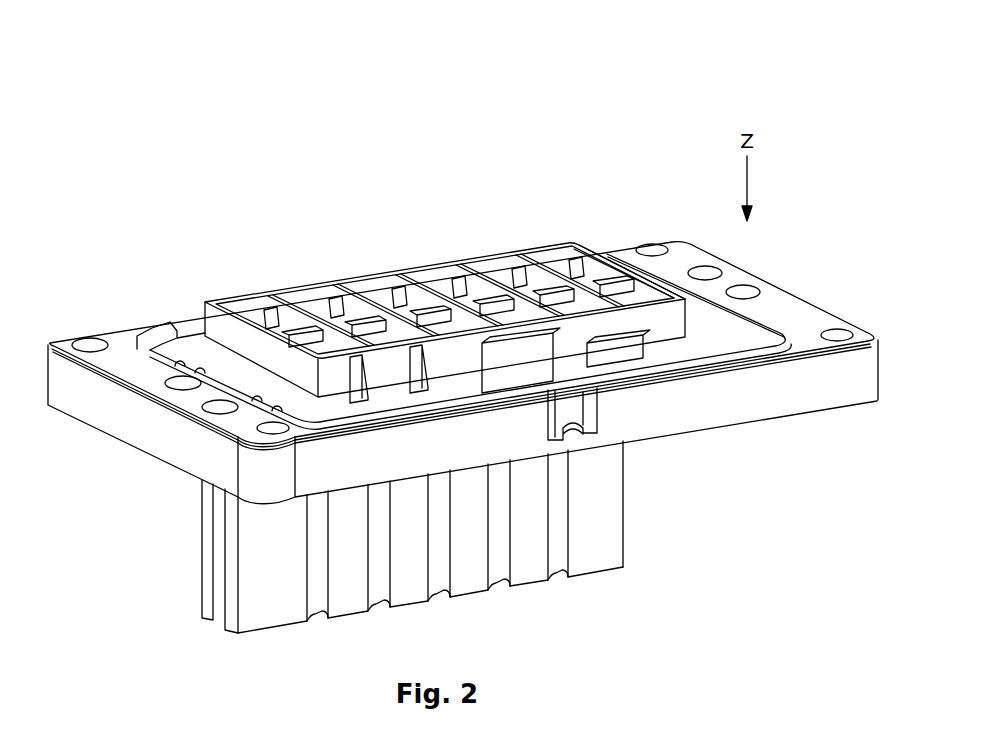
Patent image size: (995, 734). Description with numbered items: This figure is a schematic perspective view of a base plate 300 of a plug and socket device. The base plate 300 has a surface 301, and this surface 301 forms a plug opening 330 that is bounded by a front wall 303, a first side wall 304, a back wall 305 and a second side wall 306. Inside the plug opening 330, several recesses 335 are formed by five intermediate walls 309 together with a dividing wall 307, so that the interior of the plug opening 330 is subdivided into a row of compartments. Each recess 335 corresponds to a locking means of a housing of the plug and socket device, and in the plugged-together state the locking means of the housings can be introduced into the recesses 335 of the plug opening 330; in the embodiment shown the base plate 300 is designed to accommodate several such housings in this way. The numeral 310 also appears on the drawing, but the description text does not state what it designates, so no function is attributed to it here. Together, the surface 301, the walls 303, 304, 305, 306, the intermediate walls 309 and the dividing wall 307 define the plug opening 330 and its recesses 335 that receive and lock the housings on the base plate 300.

The base plate 300 is at (752, 48).
The surface 301 is at (123, 362).
The front wall 303 is at (648, 320).
The first side wall 304 is at (267, 345).
The back wall 305 is at (493, 272).
The second side wall 306 is at (645, 294).
The dividing wall 307 is at (370, 333).
The intermediate walls 309 is at (296, 302).
The end wall 310 is at (571, 275).
The plug opening 330 is at (206, 302).
The recesses 335 is at (447, 330).